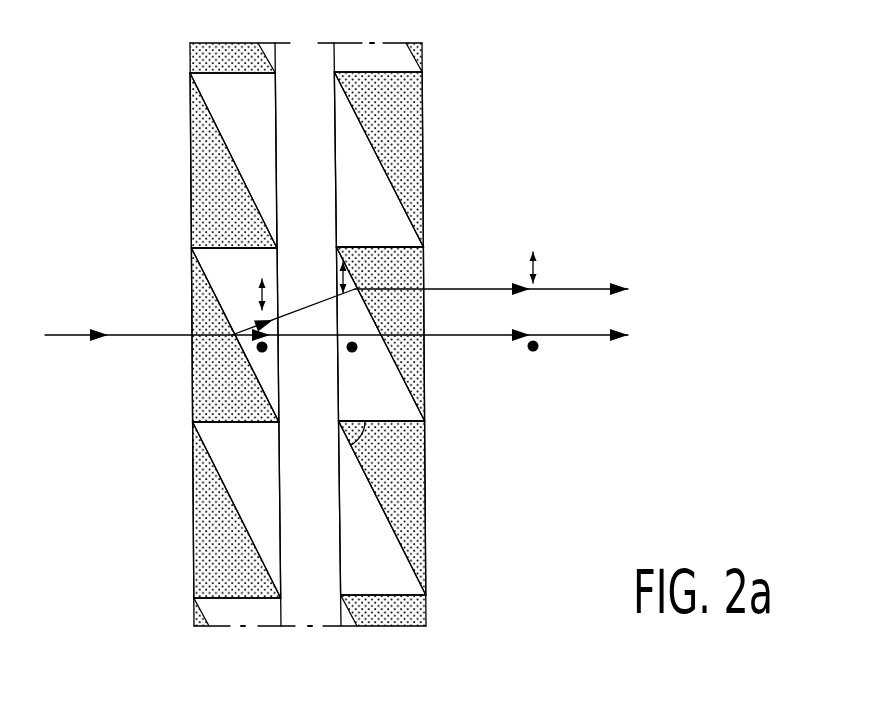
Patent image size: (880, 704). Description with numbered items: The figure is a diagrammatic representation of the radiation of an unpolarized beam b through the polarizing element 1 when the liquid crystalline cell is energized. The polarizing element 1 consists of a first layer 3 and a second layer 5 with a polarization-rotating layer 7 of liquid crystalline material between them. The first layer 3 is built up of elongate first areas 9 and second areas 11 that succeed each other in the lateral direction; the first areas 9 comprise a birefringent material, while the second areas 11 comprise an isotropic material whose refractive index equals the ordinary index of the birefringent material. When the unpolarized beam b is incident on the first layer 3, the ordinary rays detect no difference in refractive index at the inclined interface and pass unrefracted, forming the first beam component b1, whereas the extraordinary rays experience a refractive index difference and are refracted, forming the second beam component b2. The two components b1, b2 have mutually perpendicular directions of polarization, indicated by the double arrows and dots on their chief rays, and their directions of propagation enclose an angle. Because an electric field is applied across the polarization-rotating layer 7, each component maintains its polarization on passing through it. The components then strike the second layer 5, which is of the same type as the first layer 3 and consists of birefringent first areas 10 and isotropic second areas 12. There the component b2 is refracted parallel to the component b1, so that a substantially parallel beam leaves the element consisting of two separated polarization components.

The polarizing element 1 is at (552, 120).
The first layer 3 is at (210, 359).
The second layer 5 is at (411, 359).
The polarization-rotating layer 7 is at (303, 57).
The first areas 9 is at (213, 175).
The first areas 10 is at (415, 128).
The second areas 11 is at (218, 92).
The second areas 12 is at (370, 184).
The unpolarized beam b is at (138, 347).
The first beam component b1 is at (250, 338).
The second beam component b2 is at (258, 326).